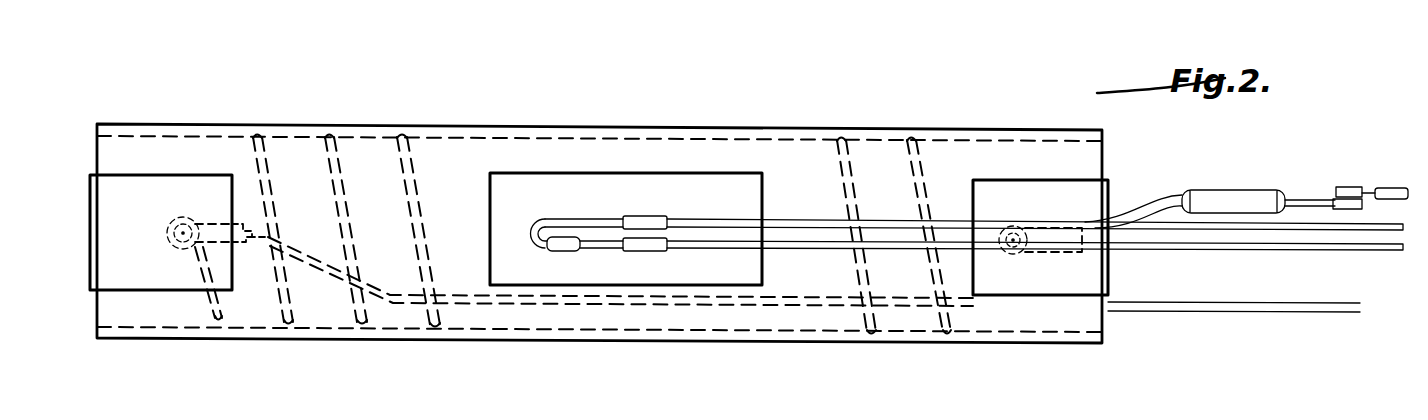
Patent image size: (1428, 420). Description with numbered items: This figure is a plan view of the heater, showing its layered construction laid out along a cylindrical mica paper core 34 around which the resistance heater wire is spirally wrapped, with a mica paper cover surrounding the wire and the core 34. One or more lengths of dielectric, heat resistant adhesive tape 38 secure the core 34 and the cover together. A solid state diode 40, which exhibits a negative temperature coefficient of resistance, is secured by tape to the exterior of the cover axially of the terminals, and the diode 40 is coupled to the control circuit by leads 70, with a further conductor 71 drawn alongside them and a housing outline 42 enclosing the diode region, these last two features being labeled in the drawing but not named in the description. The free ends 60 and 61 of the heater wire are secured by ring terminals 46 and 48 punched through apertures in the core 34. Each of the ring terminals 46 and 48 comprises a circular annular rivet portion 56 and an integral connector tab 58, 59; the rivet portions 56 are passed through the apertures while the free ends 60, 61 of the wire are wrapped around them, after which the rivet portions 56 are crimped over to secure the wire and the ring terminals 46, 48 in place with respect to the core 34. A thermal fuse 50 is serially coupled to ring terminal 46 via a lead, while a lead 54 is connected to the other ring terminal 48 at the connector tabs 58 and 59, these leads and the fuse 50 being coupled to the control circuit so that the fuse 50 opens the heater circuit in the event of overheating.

The cylindrical mica paper core 34 is at (868, 312).
The dielectric heat resistant adhesive tape 38 is at (116, 280).
The solid state diode 40 is at (566, 246).
The support housing 42 is at (745, 207).
The ring terminal 46 is at (1018, 226).
The ring terminal 48 is at (172, 226).
The thermal fuse 50 is at (1232, 197).
The lead 54 is at (340, 273).
The annular rivet portion 56 is at (180, 245).
The connector tab 58 is at (1085, 224).
The connector tab 59 is at (243, 226).
The free end of heater wire 60 is at (1008, 228).
The free end of heater wire 61 is at (213, 293).
The leads 70 is at (1350, 232).
The optical fiber 71 is at (1250, 252).